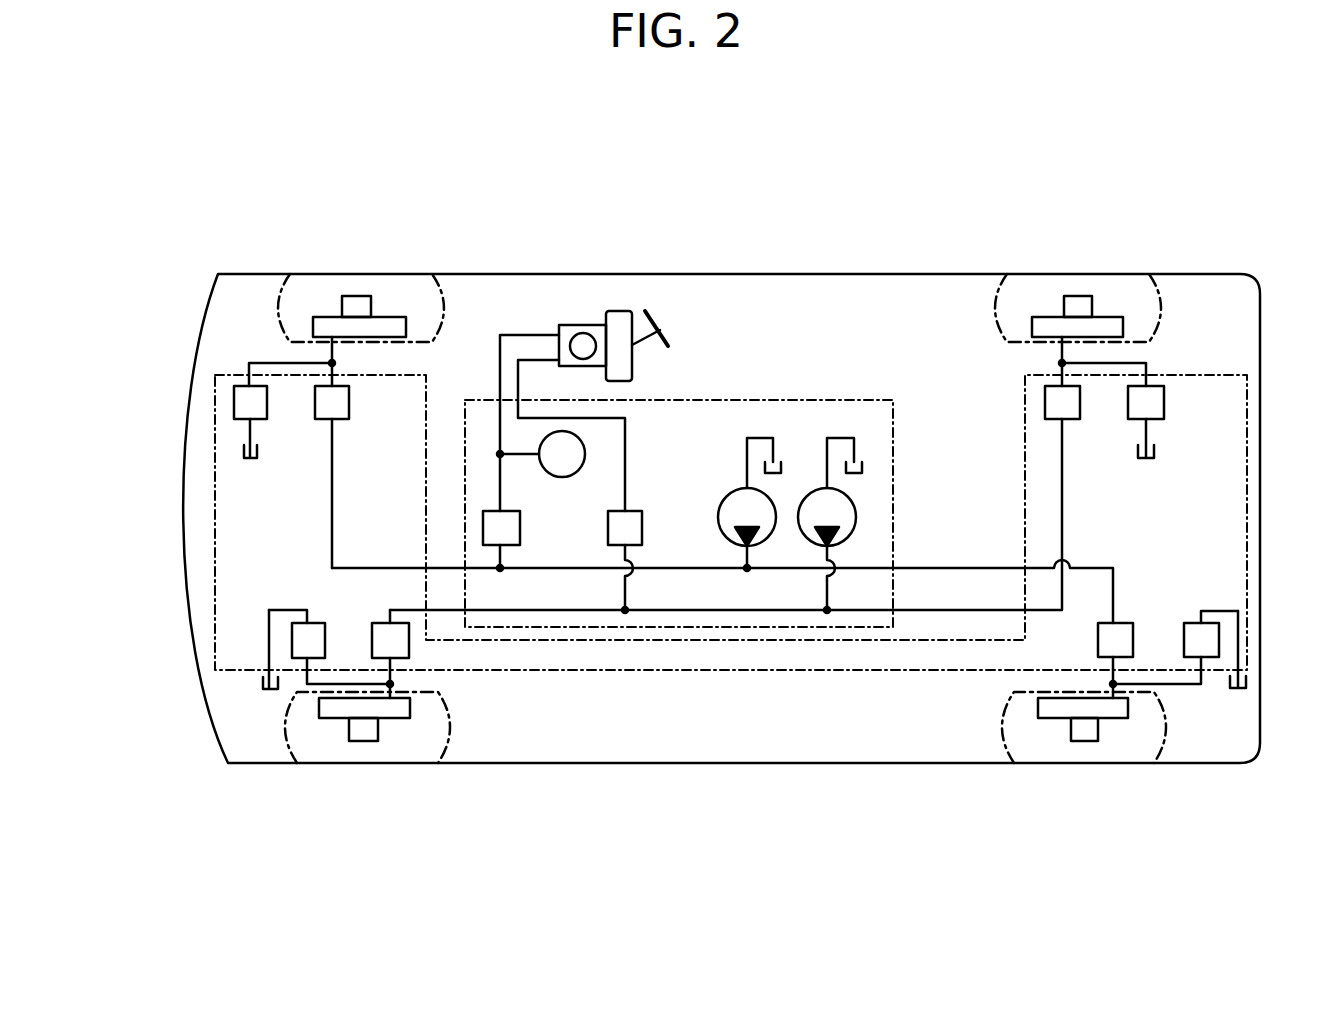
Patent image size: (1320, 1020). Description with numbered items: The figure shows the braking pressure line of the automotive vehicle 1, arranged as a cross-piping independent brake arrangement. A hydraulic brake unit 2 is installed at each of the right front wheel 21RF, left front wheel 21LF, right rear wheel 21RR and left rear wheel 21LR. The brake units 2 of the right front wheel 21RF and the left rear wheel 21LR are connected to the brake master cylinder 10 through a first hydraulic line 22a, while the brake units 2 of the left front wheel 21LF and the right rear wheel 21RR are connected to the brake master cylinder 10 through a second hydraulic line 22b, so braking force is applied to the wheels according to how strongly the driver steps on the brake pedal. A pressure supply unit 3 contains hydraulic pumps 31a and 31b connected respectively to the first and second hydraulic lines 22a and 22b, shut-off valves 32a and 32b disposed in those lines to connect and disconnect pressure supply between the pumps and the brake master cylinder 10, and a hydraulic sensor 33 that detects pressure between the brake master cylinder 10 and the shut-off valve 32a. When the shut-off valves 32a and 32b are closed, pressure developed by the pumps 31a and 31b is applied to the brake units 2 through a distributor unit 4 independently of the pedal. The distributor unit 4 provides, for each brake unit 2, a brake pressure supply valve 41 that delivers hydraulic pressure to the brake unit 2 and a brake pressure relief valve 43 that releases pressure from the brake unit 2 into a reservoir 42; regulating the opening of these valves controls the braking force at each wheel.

The automotive vehicle 1 is at (768, 272).
The hydraulic brake unit 2 is at (396, 318).
The pressure supply unit 3 is at (893, 400).
The distributor unit 4 is at (830, 672).
The brake master cylinder 10 is at (575, 325).
The right front wheel 21RF is at (300, 272).
The right rear wheel 21RR is at (1150, 274).
The left front wheel 21LF is at (320, 762).
The left rear wheel 21LR is at (1165, 748).
The first hydraulic line 22a is at (988, 568).
The second hydraulic line 22b is at (932, 610).
The hydraulic pump 31a is at (737, 490).
The hydraulic pump 31b is at (817, 490).
The shut-off valve 32a is at (483, 525).
The shut-off valve 32b is at (640, 511).
The hydraulic sensor 33 is at (585, 454).
The brake pressure supply valve 41 is at (349, 419).
The reservoir 42 is at (244, 445).
The brake pressure relief valve 43 is at (267, 419).